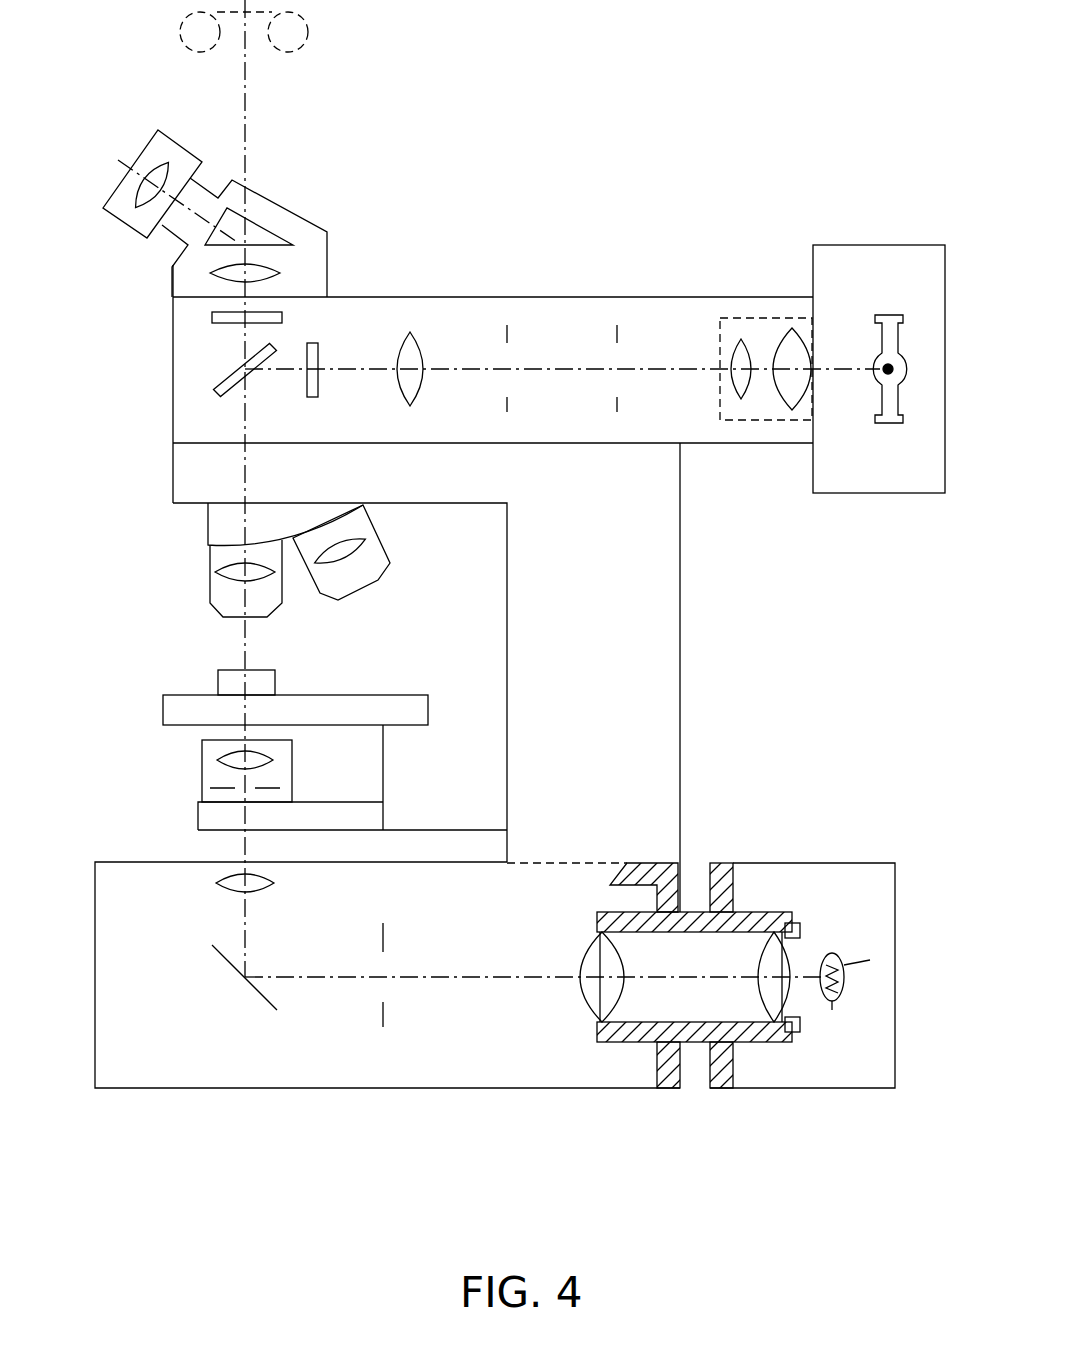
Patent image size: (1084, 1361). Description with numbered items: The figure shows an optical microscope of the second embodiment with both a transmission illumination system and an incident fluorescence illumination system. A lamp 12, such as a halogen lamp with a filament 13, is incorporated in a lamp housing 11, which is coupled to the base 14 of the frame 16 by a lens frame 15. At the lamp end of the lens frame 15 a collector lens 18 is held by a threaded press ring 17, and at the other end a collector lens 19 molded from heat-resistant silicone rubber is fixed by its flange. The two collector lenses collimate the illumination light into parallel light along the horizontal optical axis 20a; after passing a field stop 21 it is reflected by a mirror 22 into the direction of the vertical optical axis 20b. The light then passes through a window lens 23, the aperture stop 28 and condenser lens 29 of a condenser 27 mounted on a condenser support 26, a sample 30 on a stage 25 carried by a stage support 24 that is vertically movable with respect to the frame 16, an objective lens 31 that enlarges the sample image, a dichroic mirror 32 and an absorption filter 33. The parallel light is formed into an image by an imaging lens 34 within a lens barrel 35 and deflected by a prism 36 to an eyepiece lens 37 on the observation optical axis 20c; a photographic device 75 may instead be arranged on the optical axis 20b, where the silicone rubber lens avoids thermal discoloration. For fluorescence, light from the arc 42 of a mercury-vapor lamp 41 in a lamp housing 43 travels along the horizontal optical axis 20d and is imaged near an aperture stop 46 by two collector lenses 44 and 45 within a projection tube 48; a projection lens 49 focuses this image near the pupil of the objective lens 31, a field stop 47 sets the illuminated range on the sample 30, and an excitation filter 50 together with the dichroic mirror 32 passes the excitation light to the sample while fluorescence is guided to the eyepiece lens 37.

The lamp housing 11 is at (868, 1088).
The lamp 12 is at (845, 990).
The filament 13 is at (870, 960).
The base 14 is at (138, 1068).
The lens frame 15 is at (637, 1042).
The frame 16 is at (662, 604).
The press ring 17 is at (803, 1028).
The collector lens 18 is at (770, 1000).
The collector lens 19 is at (595, 1000).
The optical axis 20a is at (480, 977).
The optical axis 20b is at (247, 459).
The observation optical axis 20c is at (150, 243).
The horizontal optical axis 20d is at (670, 366).
The field stop 21 is at (383, 1027).
The mirror 22 is at (277, 1010).
The window lens 23 is at (225, 878).
The stage support 24 is at (467, 730).
The stage 25 is at (343, 710).
The condenser support 26 is at (212, 815).
The condenser 27 is at (202, 750).
The aperture stop 28 is at (216, 786).
The condenser lens 29 is at (272, 765).
The sample 30 is at (218, 683).
The objective lens 31 is at (218, 588).
The dichroic mirror 32 is at (217, 393).
The absorption filter 33 is at (212, 318).
The imaging lens 34 is at (212, 274).
The lens barrel 35 is at (277, 206).
The prism 36 is at (282, 232).
The eyepiece lens 37 is at (185, 148).
The mercury-vapor lamp 41 is at (892, 318).
The arc 42 is at (888, 374).
The lamp housing 43 is at (853, 245).
The collector lens 44 is at (787, 330).
The collector lens 45 is at (740, 340).
The aperture stop 46 is at (619, 330).
The field stop 47 is at (509, 330).
The projection tube 48 is at (492, 297).
The projection lens 49 is at (415, 335).
The excitation filter 50 is at (318, 348).
The photographic device 75 is at (307, 0).